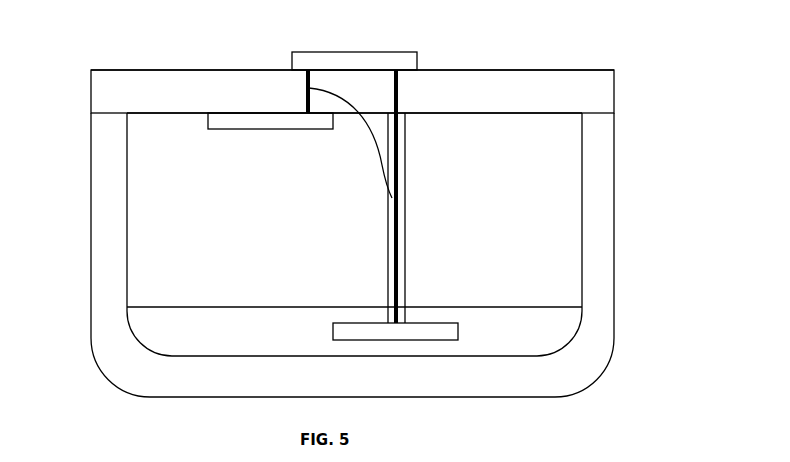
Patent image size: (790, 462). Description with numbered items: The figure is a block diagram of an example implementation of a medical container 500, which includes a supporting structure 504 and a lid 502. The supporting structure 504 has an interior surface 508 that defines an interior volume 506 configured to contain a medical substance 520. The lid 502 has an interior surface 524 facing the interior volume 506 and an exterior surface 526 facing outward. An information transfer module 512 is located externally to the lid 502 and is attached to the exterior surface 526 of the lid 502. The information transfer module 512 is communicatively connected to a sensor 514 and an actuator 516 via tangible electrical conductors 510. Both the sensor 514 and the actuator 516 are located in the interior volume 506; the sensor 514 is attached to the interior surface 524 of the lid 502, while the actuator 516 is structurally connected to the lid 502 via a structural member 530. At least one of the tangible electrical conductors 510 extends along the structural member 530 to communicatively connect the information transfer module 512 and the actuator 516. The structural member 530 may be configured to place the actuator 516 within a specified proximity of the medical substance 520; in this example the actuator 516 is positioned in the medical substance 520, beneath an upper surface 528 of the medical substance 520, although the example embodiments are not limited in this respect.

The medical container 500 is at (657, 72).
The lid 502 is at (90, 91).
The supporting structure 504 is at (596, 375).
The interior volume 506 is at (372, 215).
The interior surface 508 is at (127, 220).
The tangible electrical conductors 510 is at (395, 173).
The information transfer module 512 is at (372, 52).
The sensor 514 is at (287, 130).
The actuator 516 is at (459, 333).
The medical substance 520 is at (284, 333).
The interior surface 524 is at (535, 114).
The exterior surface 526 is at (563, 70).
The upper surface 528 is at (462, 307).
The structural member 530 is at (405, 270).